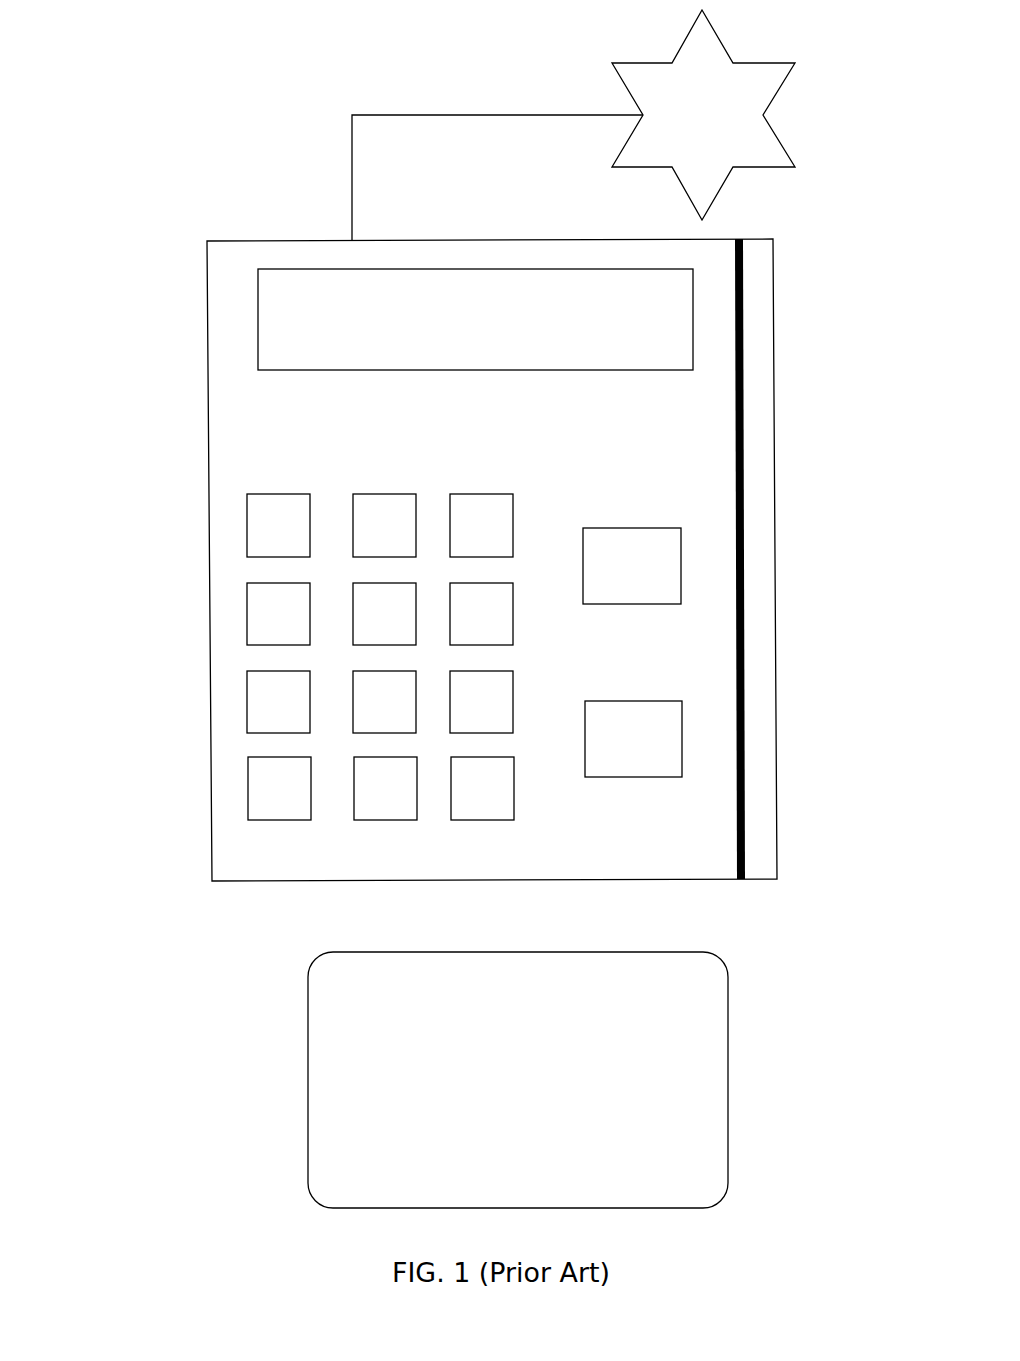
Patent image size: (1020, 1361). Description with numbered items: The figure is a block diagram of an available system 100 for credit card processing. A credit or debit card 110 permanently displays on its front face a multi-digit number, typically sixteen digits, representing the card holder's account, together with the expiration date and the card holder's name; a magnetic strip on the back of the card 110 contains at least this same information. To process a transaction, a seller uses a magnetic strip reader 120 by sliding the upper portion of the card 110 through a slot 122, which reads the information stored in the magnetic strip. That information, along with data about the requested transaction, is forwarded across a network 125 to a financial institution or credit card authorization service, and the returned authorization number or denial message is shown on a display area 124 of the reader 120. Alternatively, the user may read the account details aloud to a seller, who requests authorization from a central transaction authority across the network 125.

The system 100 is at (158, 207).
The credit or debit card 110 is at (728, 1017).
The magnetic strip reader 120 is at (207, 462).
The slot 122 is at (744, 400).
The display area 124 is at (475, 319).
The network 125 is at (703, 115).